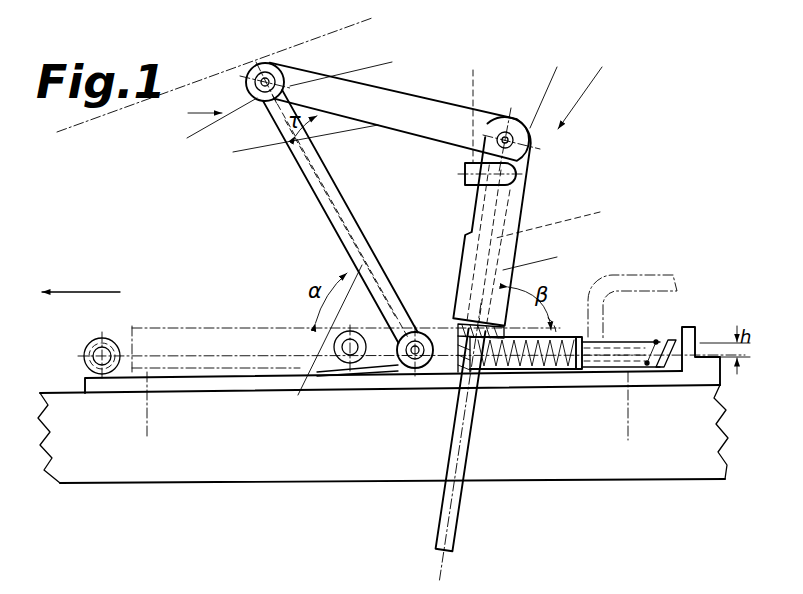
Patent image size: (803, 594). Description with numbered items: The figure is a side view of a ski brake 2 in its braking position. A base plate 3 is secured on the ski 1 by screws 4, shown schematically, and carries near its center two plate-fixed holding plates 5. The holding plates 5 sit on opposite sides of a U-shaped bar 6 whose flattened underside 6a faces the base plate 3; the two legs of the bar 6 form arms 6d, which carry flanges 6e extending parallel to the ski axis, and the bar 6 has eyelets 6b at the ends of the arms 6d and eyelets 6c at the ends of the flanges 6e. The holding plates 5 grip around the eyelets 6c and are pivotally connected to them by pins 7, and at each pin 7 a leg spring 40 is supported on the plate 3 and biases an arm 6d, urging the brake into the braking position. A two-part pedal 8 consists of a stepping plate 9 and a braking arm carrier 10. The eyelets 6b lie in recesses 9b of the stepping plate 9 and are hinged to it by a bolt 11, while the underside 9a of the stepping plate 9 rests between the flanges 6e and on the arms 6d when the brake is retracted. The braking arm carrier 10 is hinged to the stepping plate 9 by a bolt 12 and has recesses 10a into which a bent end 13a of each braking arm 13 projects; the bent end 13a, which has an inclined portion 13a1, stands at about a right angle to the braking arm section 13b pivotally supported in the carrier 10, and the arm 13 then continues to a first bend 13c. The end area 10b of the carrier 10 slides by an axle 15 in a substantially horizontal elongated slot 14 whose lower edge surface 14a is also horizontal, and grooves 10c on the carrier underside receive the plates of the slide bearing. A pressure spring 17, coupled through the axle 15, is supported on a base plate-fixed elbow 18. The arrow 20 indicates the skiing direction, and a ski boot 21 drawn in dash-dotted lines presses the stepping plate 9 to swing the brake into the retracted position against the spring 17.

The ski 1 is at (108, 462).
The ski brake 2 is at (198, 114).
The base plate 3 is at (187, 388).
The screws 4 is at (148, 437).
The holding plates 5 is at (390, 387).
The U-shaped bar 6 is at (305, 196).
The underside of the bar 6a is at (318, 222).
The eyelets 6b is at (273, 67).
The eyelets 6c is at (402, 370).
The arms 6d is at (305, 168).
The flanges 6e is at (317, 373).
The pins 7 is at (440, 387).
The pedal 8 is at (584, 86).
The stepping plate 9 is at (443, 102).
The underside of the stepping plate 9a is at (292, 144).
The recesses of the stepping plate 9b is at (352, 64).
The braking arm carrier 10 is at (522, 209).
The recesses of the braking arm carrier 10a is at (556, 85).
The end area of the braking arm carrier 10b is at (462, 390).
The grooves 10c is at (547, 252).
The bolt 11 is at (211, 130).
The bolt 12 is at (508, 131).
The braking arm 13 is at (461, 523).
The bent end of the braking arm 13a is at (530, 167).
The inclined portion 13a1 is at (481, 102).
The braking arm section 13b is at (570, 220).
The first bend 13c is at (478, 390).
The elongated slot or slide bearing 14 is at (563, 383).
The lower edge surface of the elongated slot 14a is at (523, 362).
The axle 15 is at (482, 393).
The pressure spring 17 is at (657, 340).
The elbow 18 is at (685, 320).
The arrow 20 is at (81, 283).
The ski boot 21 is at (75, 118).
The leg spring 40 is at (259, 555).